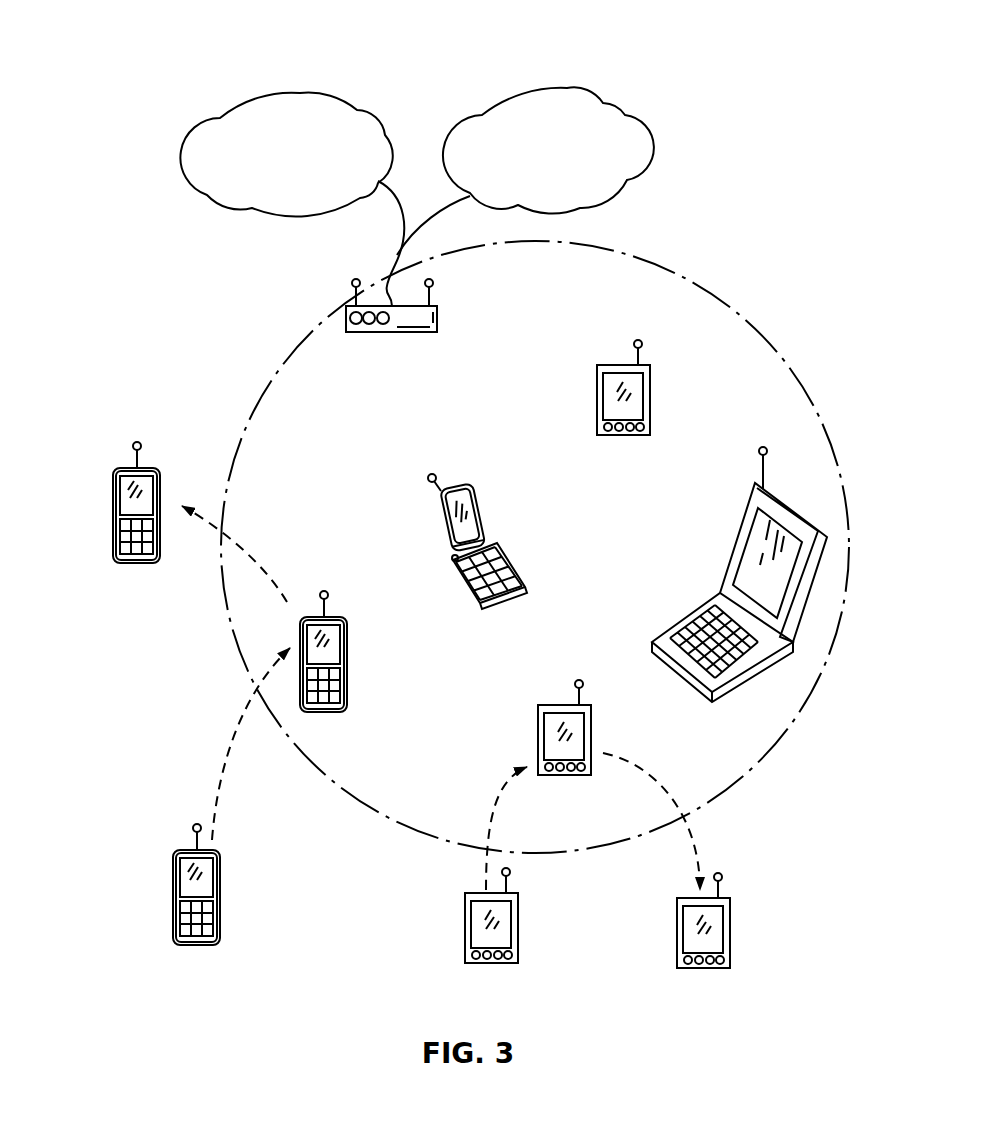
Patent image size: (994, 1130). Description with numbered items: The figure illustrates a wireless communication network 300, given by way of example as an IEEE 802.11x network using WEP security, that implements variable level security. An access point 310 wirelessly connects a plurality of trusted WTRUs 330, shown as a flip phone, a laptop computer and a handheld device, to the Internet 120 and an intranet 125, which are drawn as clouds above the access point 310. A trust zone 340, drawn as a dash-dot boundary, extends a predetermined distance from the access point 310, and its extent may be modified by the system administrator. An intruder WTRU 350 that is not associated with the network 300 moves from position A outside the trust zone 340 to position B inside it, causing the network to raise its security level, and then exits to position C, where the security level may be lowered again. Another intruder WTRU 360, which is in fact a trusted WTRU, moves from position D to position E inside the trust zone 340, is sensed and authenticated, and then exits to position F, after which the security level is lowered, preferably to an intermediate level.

The Internet 120 is at (302, 92).
The intranet 125 is at (567, 88).
The wireless communication network 300 is at (803, 138).
The access point 310 is at (393, 332).
The trusted WTRUs 330 is at (739, 540).
The trust zone 340 is at (795, 708).
The intruder WTRU 350 is at (137, 563).
The intruder WTRU (trusted) 360 is at (538, 715).